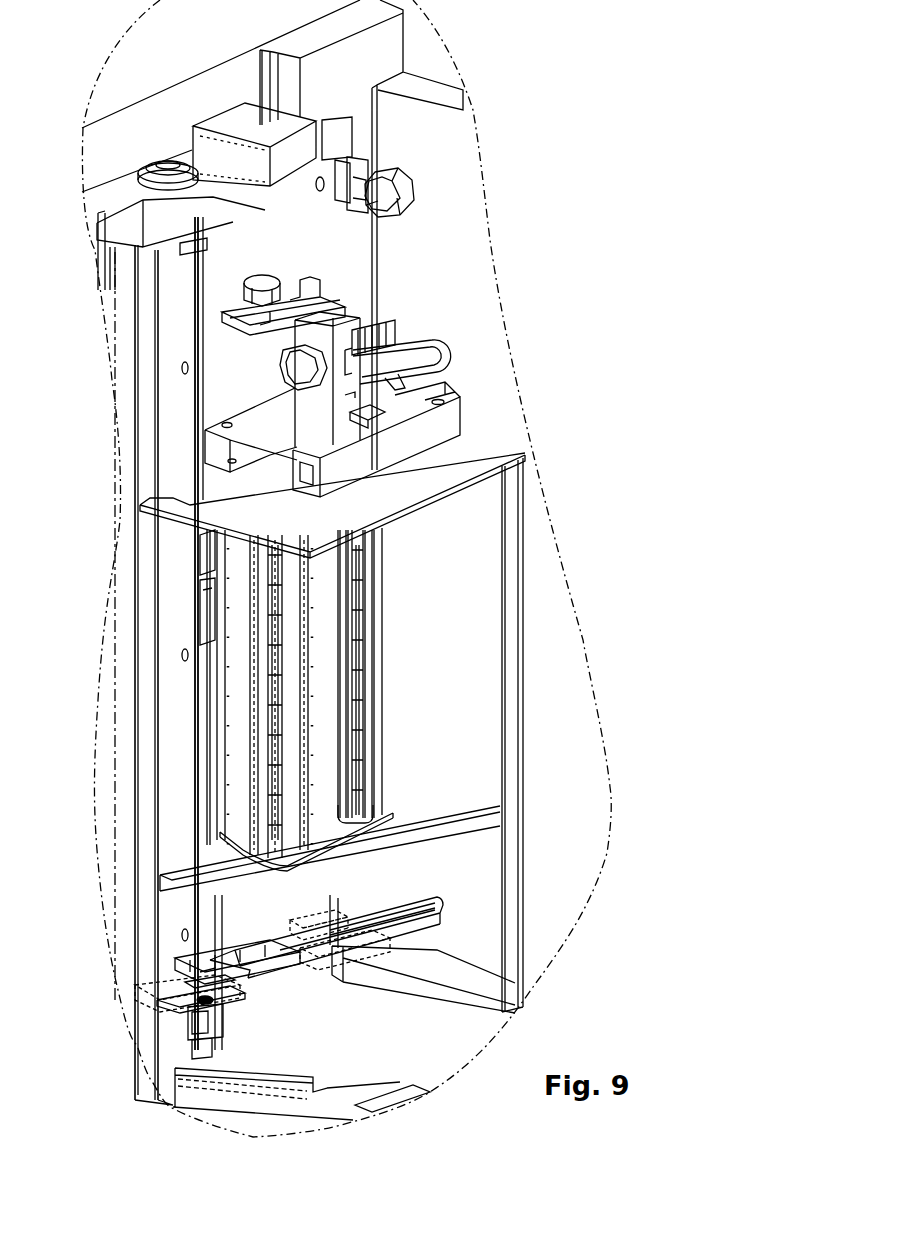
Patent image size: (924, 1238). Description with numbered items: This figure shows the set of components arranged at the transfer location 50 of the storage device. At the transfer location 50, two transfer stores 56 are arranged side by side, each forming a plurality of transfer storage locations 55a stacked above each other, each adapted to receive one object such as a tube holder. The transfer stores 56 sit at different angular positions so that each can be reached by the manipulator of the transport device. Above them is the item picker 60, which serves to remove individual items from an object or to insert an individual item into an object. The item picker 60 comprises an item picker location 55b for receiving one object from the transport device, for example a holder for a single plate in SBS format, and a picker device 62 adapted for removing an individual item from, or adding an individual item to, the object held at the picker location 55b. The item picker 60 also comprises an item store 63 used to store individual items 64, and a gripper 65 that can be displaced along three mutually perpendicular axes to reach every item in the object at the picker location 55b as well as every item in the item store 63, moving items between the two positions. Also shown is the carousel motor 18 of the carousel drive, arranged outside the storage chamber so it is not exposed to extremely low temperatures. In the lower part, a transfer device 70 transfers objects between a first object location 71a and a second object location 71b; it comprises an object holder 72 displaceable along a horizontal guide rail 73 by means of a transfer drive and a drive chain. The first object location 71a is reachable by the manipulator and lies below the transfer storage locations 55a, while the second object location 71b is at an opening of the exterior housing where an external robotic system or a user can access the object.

The carousel motor 18 is at (367, 193).
The gripper 65 is at (327, 292).
The picker device 62 is at (363, 297).
The individual items 64 is at (382, 340).
The item picker 60 is at (458, 337).
The item picker location 55b is at (450, 353).
The item store 63 is at (443, 397).
The transfer location 50 is at (460, 693).
The transfer store 56 is at (380, 623).
The transfer storage locations 55a is at (357, 720).
The transfer device 70 is at (463, 890).
The first object location 71a is at (353, 940).
The second object location 71b is at (147, 997).
The object holder 72 is at (250, 973).
The horizontal guide rail / transfer drive 73 is at (193, 1043).